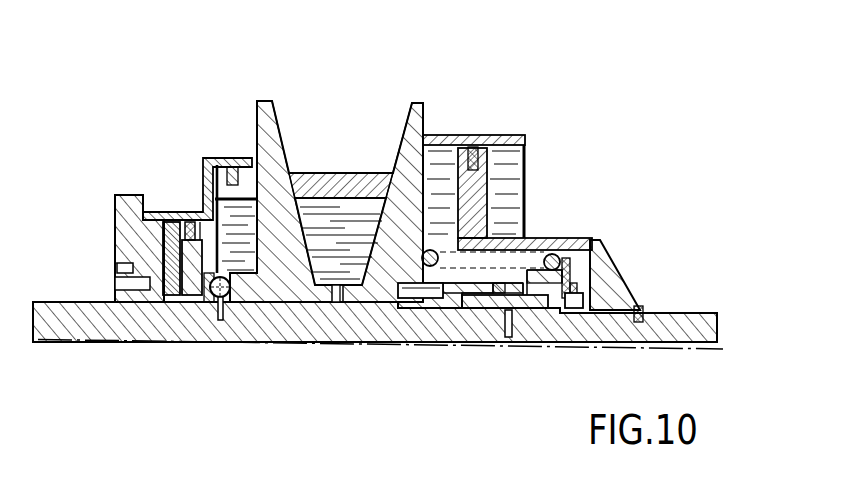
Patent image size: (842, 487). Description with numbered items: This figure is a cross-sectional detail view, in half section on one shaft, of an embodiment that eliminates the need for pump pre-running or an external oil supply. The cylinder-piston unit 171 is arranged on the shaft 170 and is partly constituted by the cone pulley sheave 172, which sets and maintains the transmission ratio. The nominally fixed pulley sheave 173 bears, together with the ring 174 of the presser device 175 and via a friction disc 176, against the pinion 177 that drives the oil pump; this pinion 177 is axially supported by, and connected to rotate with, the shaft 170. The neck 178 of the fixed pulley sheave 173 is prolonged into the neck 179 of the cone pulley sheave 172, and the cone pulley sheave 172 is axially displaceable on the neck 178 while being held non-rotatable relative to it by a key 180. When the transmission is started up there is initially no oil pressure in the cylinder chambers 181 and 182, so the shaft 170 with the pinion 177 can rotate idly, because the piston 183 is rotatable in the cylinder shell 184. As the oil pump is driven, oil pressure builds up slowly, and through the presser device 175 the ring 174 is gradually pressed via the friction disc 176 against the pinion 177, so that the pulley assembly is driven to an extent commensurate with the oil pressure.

The shaft 170 is at (588, 323).
The cylinder-piston unit 171 is at (508, 113).
The cone pulley sheave 172 is at (412, 108).
The nominally fixed pulley sheave 173 is at (262, 108).
The ring 174 is at (196, 292).
The presser device 175 is at (230, 294).
The friction disc 176 is at (172, 298).
The pinion 177 is at (130, 195).
The neck of the fixed pulley sheave 178 is at (490, 308).
The neck of the cone pulley sheave 179 is at (485, 272).
The key 180 is at (430, 298).
The cylinder chamber 181 is at (424, 168).
The cylinder chamber 182 is at (215, 210).
The piston 183 is at (603, 268).
The cylinder shell 184 is at (450, 136).